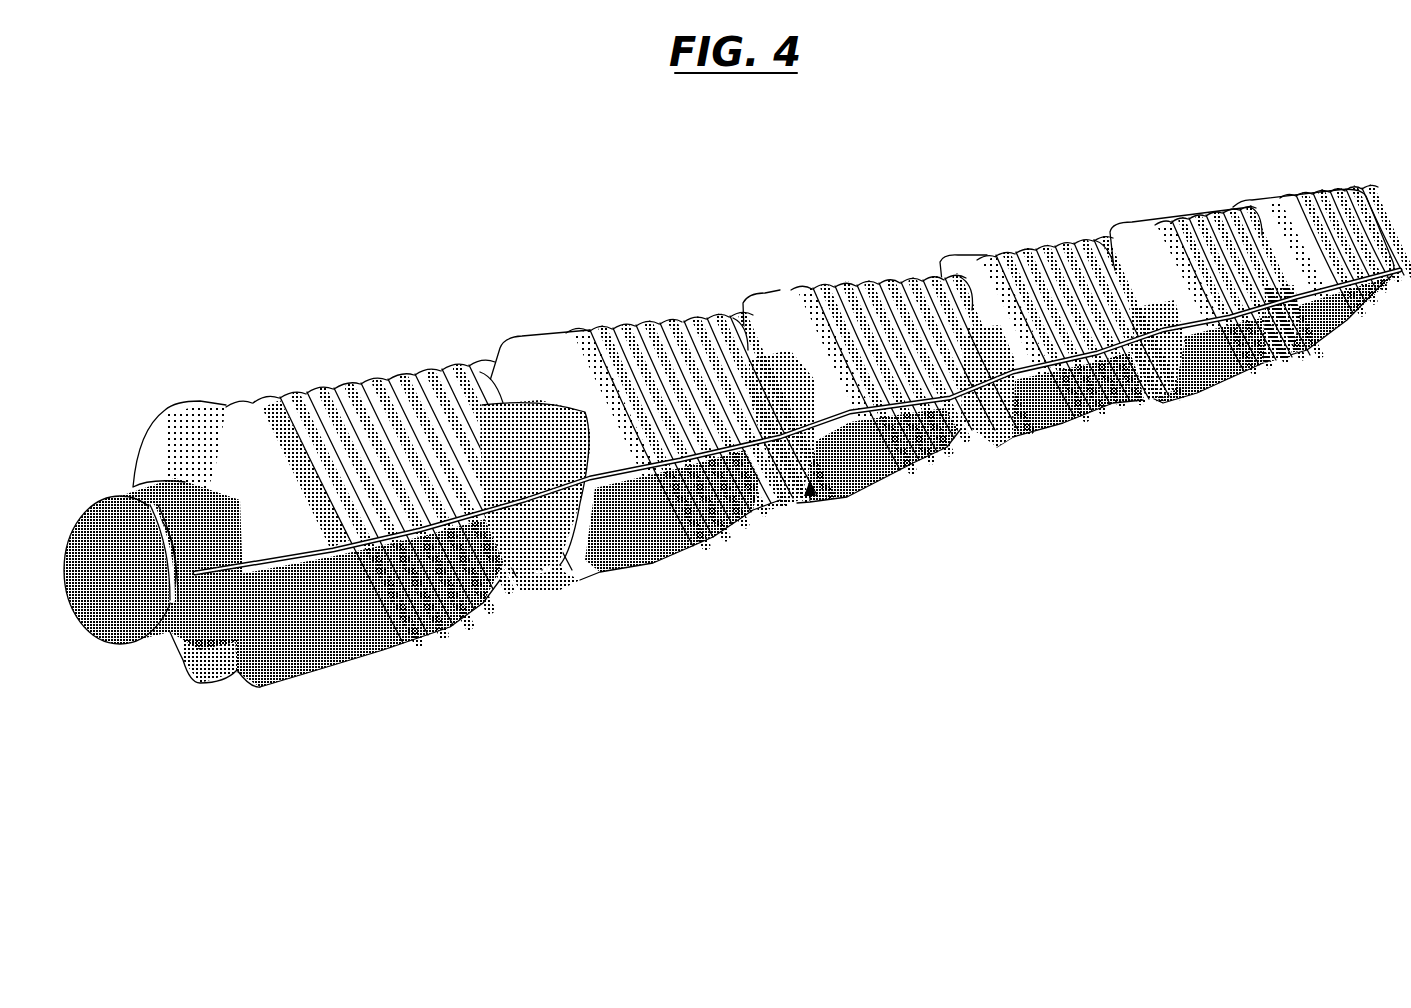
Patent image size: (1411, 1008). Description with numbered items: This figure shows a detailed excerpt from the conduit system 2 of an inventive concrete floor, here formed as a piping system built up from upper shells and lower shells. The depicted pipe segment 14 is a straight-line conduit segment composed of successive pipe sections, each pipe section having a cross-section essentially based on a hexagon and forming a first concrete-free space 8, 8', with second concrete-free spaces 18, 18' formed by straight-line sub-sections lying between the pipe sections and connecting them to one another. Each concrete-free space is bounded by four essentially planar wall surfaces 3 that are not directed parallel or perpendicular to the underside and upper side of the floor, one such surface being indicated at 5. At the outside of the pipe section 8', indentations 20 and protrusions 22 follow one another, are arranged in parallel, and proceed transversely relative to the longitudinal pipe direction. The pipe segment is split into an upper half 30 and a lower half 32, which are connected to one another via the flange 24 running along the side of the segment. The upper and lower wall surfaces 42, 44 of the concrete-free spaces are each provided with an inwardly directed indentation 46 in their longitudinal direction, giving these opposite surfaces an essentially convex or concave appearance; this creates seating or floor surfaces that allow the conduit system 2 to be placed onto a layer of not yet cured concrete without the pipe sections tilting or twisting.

The conduit system 2 is at (1333, 190).
The wall surface 3 is at (917, 462).
The segment 5 is at (1167, 213).
The first concrete-free space 8 is at (406, 459).
The first concrete-free space 8' is at (502, 439).
The conduit segment 14 is at (810, 496).
The straight-line sub-section 18 is at (774, 523).
The joint 18' is at (536, 475).
The indentation 20 is at (907, 273).
The protrusion 22 is at (663, 317).
The flange 24 is at (430, 640).
The upper half 30 is at (193, 437).
The lower half 32 is at (220, 683).
The upper wall surface 42 is at (980, 263).
The lower wall surface 44 is at (1143, 400).
The indentation 46 is at (983, 253).